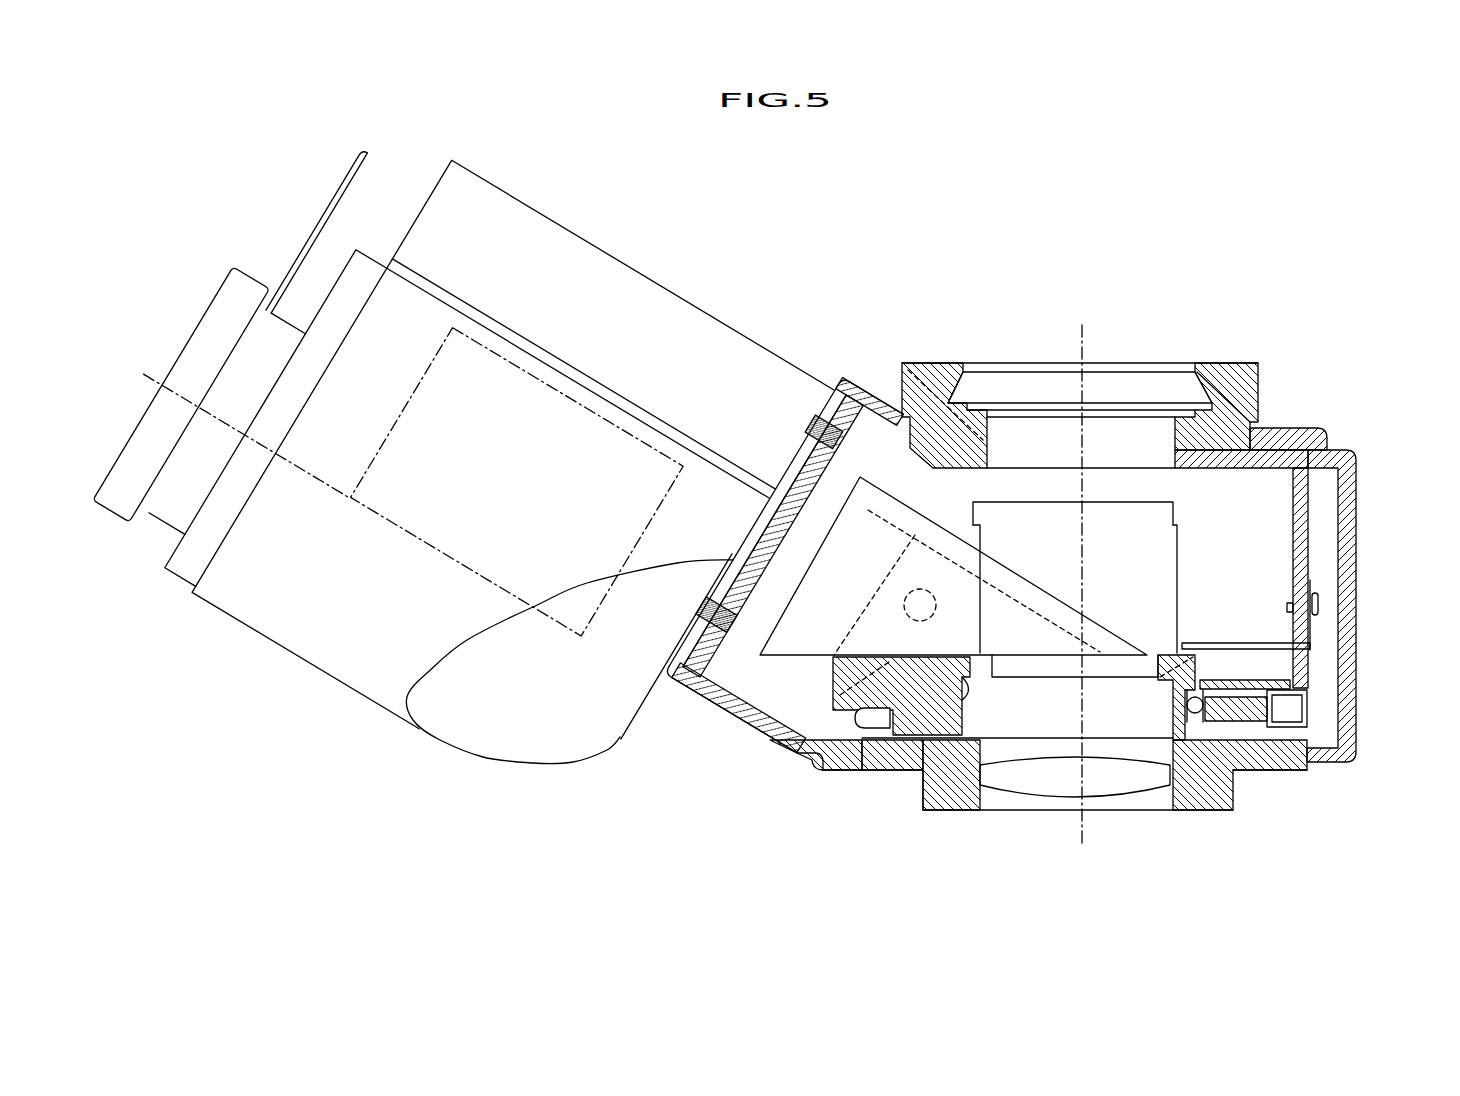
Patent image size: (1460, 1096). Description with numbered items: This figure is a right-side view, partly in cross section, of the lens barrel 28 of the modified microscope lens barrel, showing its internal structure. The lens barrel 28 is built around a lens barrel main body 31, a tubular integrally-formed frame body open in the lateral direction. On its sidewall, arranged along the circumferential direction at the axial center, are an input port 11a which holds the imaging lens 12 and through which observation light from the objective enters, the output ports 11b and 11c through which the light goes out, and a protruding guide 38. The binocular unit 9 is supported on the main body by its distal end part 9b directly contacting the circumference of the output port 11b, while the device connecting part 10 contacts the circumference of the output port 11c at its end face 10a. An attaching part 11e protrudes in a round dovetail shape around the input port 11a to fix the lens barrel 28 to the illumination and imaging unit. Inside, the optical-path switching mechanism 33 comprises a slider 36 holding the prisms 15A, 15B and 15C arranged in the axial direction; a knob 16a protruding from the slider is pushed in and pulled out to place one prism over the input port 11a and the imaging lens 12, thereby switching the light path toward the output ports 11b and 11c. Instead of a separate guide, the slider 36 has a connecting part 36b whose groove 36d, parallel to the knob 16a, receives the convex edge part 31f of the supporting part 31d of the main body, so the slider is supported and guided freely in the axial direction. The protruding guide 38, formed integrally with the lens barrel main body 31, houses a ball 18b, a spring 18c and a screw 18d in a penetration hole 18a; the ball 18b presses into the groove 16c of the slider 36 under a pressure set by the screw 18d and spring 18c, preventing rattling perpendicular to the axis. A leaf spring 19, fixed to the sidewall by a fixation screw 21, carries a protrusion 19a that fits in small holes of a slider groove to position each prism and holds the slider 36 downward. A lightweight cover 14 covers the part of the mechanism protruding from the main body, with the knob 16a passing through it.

The binocular unit 9 is at (342, 682).
The distal end part 9b is at (697, 650).
The device connecting part 10 is at (965, 363).
The end face 10a is at (1223, 460).
The input port 11a is at (1043, 803).
The output port 11b is at (748, 598).
The output port 11c is at (1133, 458).
The attaching part 11e is at (1212, 813).
The imaging lens 12 is at (1003, 788).
The cover 14 is at (1325, 428).
The prism 15A is at (943, 497).
The prism 15B is at (1033, 525).
The prism 15C is at (1103, 502).
The knob 16a is at (793, 443).
The groove 16c is at (1165, 700).
The penetration hole 18a is at (1270, 688).
The ball 18b is at (1192, 716).
The spring 18c is at (1253, 768).
The screw 18d is at (1310, 708).
The leaf spring 19 is at (1190, 643).
The protrusion 19a is at (1260, 648).
The fixation screw 21 is at (1320, 600).
The lens barrel 28 is at (1283, 427).
The lens barrel main body 31 is at (1273, 772).
The supporting part 31d is at (837, 772).
The convex edge part 31f is at (863, 713).
The optical-path switching mechanism 33 is at (945, 380).
The slider 36 is at (935, 690).
The connecting part 36b is at (920, 770).
The groove 36d is at (890, 728).
The protruding guide 38 is at (1253, 677).